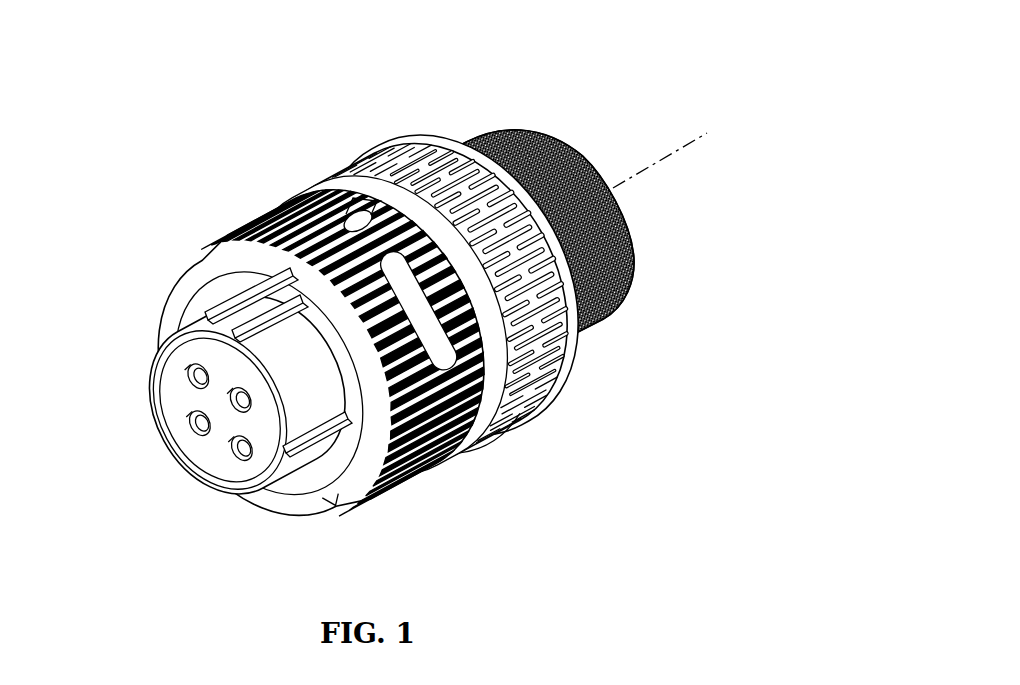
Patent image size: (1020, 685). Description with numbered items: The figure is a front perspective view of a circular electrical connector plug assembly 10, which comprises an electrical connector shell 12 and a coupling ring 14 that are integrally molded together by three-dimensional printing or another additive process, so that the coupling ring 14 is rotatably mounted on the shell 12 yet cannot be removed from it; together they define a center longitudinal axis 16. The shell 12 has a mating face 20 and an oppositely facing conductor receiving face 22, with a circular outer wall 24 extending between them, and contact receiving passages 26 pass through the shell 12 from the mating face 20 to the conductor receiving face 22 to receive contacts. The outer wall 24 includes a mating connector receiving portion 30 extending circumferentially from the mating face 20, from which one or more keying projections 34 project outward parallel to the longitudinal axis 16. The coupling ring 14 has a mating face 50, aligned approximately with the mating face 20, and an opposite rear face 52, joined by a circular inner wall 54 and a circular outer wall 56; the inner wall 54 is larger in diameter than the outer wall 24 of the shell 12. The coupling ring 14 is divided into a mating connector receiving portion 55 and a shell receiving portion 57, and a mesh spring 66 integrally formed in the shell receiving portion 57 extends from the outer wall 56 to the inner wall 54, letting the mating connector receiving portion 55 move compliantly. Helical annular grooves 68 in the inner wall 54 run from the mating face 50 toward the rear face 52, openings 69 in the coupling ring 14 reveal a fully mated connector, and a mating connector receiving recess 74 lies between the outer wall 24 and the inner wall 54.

The circular electrical connector plug assembly 10 is at (428, 94).
The electrical connector shell 12 is at (247, 395).
The coupling ring 14 is at (411, 306).
The center longitudinal axis 16 is at (712, 128).
The mating face 20 is at (198, 375).
The conductor receiving face 22 is at (527, 233).
The circular outer wall 24 is at (299, 463).
The contact receiving passages 26 is at (200, 422).
The mating connector receiving portion 30 is at (247, 395).
The keying projections 34 is at (222, 308).
The mating face 50 is at (320, 355).
The rear face 52 is at (422, 300).
The circular inner wall 54 is at (207, 293).
The mating connector receiving portion 55 is at (375, 325).
The circular outer wall 56 is at (332, 268).
The shell receiving portion 57 is at (491, 435).
The mesh spring 66 is at (473, 273).
The helical annular grooves 68 is at (332, 499).
The openings 69 is at (362, 213).
The mating connector receiving recess 74 is at (403, 405).